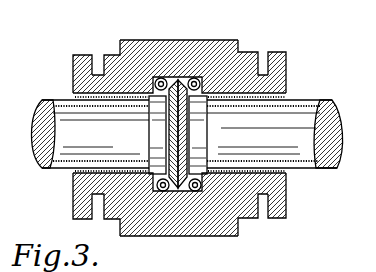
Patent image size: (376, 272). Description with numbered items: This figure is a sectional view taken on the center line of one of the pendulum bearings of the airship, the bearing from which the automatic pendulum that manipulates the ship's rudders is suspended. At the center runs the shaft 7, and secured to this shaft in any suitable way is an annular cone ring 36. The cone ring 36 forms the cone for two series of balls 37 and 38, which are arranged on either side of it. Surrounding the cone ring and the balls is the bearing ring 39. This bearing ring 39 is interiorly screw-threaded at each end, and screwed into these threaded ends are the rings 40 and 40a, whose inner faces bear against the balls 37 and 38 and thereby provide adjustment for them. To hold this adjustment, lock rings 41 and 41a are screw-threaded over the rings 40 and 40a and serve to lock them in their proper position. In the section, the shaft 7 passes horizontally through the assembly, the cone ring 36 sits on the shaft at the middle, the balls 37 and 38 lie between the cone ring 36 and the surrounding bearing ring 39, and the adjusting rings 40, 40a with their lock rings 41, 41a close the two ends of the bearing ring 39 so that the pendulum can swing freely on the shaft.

The shaft 7 is at (304, 101).
The annular cone ring 36 is at (193, 138).
The series of balls 37 is at (197, 97).
The series of balls 38 is at (157, 97).
The bearing ring 39 is at (180, 40).
The ring 40 is at (72, 55).
The ring 40a is at (284, 52).
The lock ring 41 is at (115, 54).
The lock ring 41a is at (248, 52).